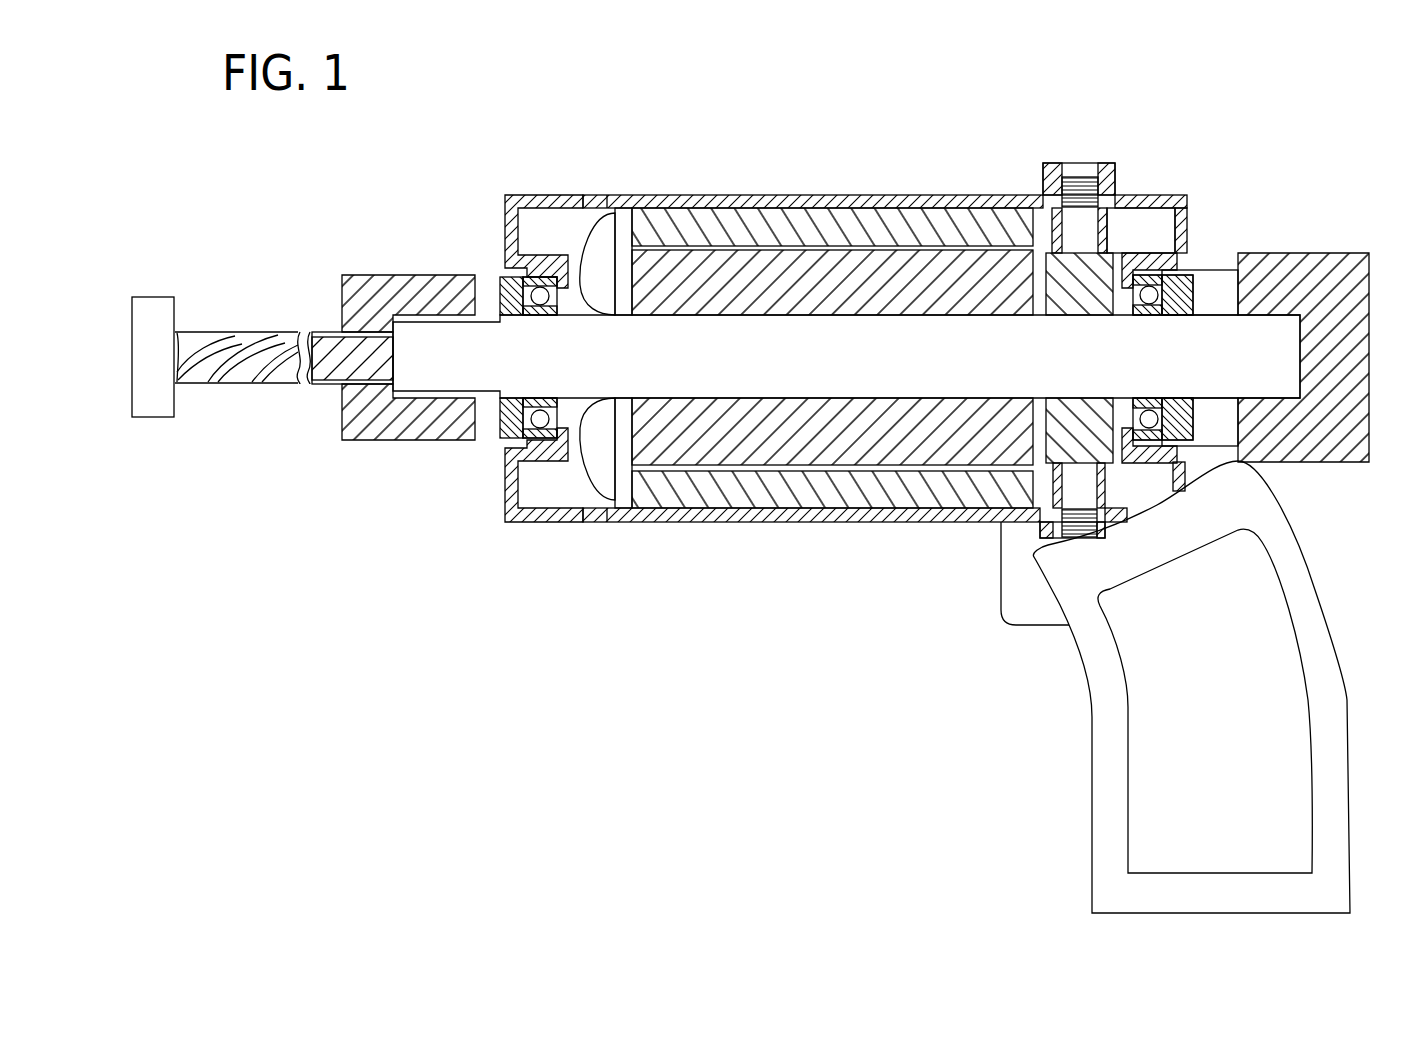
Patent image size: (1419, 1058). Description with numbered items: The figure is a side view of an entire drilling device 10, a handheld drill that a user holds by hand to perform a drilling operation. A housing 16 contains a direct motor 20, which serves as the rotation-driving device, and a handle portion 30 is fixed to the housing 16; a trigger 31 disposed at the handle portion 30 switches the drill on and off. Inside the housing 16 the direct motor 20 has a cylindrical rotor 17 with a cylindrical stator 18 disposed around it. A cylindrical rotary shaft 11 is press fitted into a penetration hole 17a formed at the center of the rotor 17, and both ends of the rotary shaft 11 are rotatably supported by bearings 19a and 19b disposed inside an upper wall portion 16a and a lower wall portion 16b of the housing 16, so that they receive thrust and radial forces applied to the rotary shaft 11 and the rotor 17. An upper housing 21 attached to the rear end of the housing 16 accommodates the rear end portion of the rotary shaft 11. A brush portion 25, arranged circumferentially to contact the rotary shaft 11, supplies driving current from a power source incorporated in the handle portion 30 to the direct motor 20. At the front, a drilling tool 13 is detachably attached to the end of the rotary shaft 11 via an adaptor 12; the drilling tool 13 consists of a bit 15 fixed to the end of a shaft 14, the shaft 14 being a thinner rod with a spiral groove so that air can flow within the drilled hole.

The drilling device 10 is at (1172, 154).
The rotary shaft 11 is at (818, 390).
The adaptor 12 is at (398, 283).
The drilling tool 13 is at (203, 303).
The shaft 14 is at (268, 340).
The bit 15 is at (132, 318).
The housing 16 is at (716, 195).
The upper wall portion 16a is at (1187, 205).
The lower wall portion 16b is at (505, 500).
The rotor 17 is at (687, 460).
The penetration hole 17a is at (900, 423).
The stator 18 is at (757, 503).
The bearing 19a is at (1163, 292).
The bearing 19b is at (540, 290).
The direct motor 20 is at (827, 203).
The upper housing 21 is at (1334, 463).
The brush portion 25 is at (1050, 265).
The handle portion 30 is at (1334, 631).
The trigger 31 is at (1005, 601).